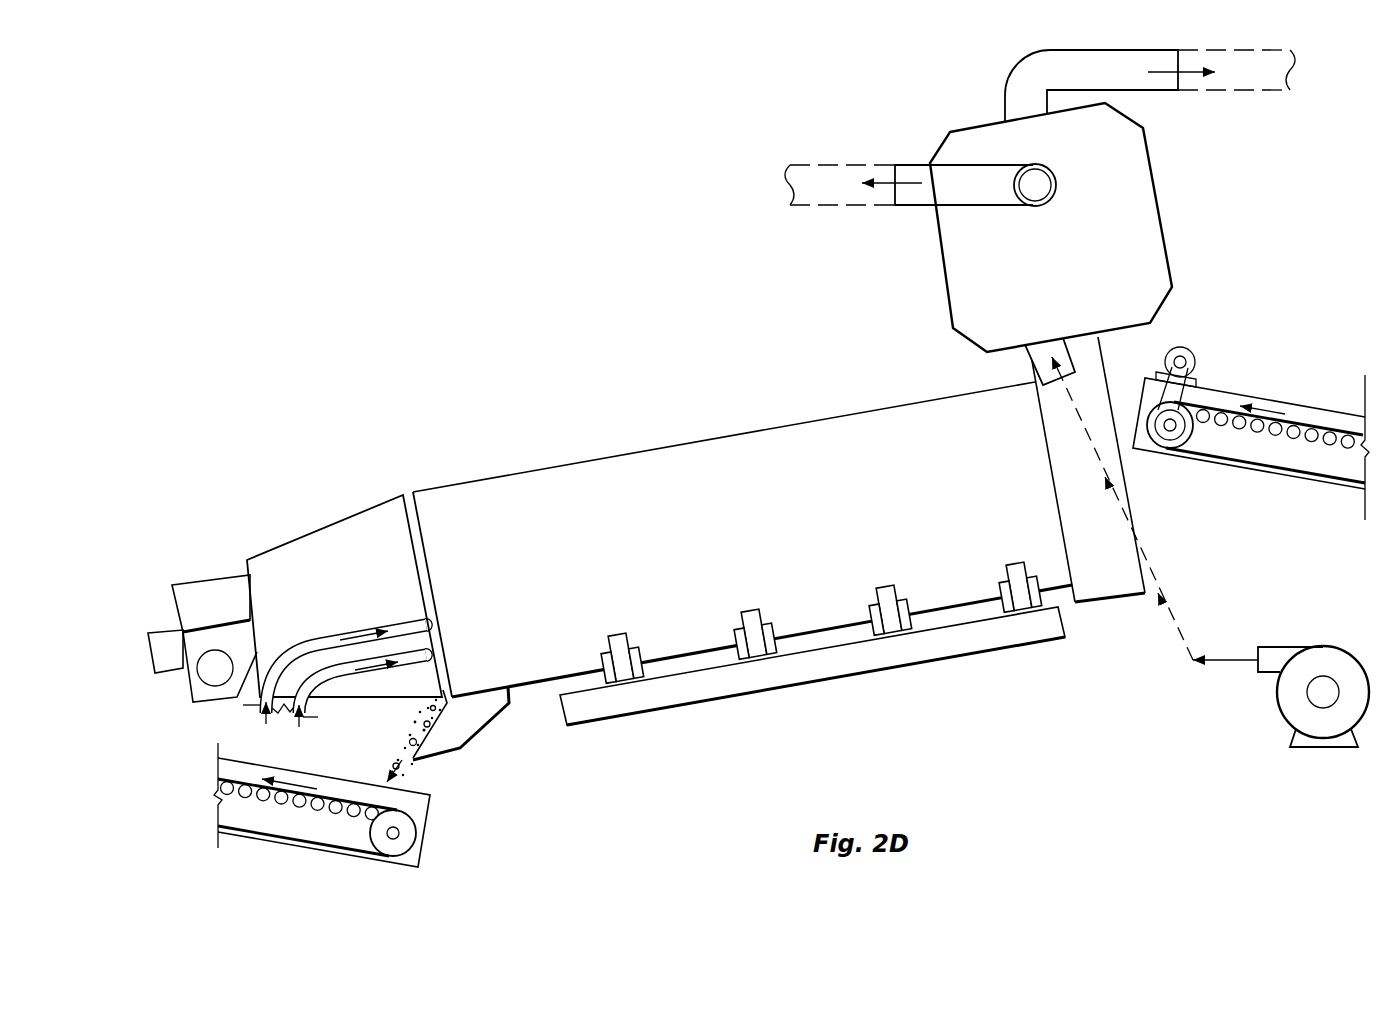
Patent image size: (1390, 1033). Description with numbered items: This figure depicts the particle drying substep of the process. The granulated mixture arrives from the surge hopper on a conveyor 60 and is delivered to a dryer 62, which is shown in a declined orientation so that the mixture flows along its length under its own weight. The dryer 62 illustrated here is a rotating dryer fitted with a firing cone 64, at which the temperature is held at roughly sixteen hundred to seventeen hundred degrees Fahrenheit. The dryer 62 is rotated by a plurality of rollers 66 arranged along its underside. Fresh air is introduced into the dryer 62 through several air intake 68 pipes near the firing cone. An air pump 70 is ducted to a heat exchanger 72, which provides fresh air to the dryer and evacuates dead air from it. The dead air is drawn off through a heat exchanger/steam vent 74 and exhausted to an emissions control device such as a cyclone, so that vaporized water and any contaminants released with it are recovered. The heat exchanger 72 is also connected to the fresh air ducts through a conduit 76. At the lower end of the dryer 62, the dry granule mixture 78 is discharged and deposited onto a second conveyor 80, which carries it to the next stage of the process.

The conveyor 60 is at (1302, 422).
The dryer 62 is at (677, 462).
The firing cone 64 is at (312, 530).
The rollers 66 is at (628, 660).
The air intake 68 is at (263, 703).
The air pump 70 is at (1348, 668).
The heat exchanger 72 is at (1143, 200).
The heat exchanger/steam vent 74 is at (1082, 48).
The conduit 76 is at (908, 165).
The dry granule mixture 78 is at (452, 746).
The conveyor 80 is at (347, 850).